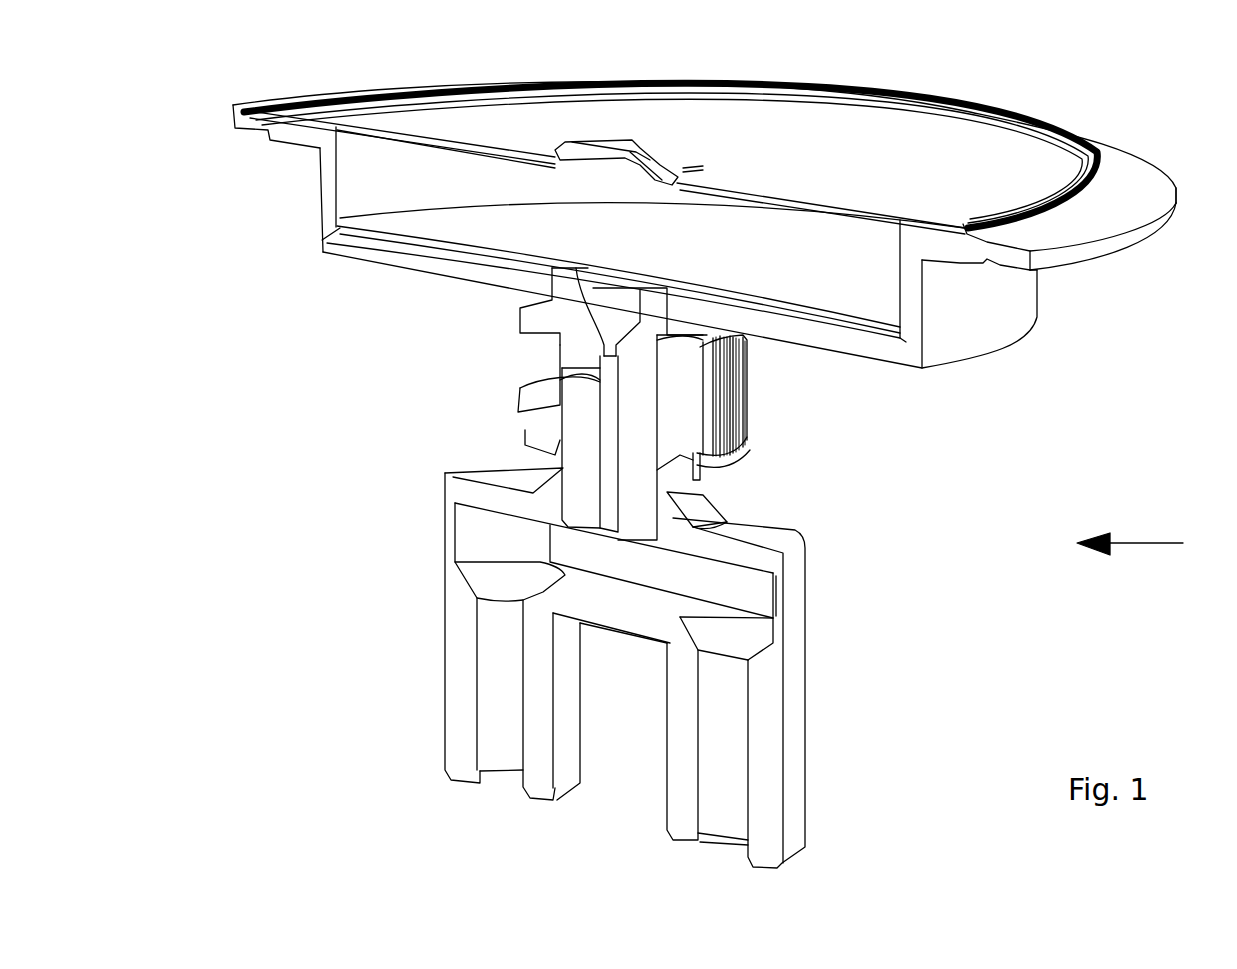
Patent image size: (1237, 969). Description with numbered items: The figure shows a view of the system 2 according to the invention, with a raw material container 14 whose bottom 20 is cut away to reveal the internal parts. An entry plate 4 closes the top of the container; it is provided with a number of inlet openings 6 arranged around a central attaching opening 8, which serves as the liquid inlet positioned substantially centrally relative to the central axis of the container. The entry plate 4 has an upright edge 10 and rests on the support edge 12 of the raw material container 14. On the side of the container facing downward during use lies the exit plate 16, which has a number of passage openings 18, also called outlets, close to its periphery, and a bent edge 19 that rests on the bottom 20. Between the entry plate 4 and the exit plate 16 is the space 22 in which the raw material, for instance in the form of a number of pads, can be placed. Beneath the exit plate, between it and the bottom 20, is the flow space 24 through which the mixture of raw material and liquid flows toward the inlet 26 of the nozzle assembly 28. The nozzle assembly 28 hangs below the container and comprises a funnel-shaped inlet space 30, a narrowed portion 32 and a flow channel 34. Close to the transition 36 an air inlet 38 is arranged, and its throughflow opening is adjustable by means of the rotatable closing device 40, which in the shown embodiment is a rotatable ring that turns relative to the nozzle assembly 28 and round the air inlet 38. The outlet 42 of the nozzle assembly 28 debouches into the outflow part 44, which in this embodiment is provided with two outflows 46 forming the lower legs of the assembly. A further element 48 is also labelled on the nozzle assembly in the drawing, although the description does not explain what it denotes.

The system 2 is at (1150, 545).
The entry plate 4 is at (848, 165).
The inlet openings 6 is at (687, 167).
The central attaching opening 8 is at (620, 147).
The upright edge 10 is at (295, 110).
The support edge 12 is at (267, 107).
The raw material container 14 is at (327, 213).
The exit plate 16 is at (800, 277).
The passage openings 18 is at (457, 207).
The bent edge 19 is at (325, 243).
The bottom 20 is at (453, 270).
The space 22 is at (358, 172).
The flow space 24 is at (392, 243).
The inlet 26 is at (597, 277).
The nozzle assembly 28 is at (580, 440).
The funnel-shaped inlet space 30 is at (612, 318).
The narrowed portion 32 is at (612, 360).
The flow channel 34 is at (662, 443).
The transition 36 is at (633, 395).
The air inlet 38 is at (590, 380).
The closing device 40 is at (675, 395).
The outlet 42 is at (613, 515).
The outflow part 44 is at (795, 590).
The outflows 46 is at (498, 755).
The guide pin 48 is at (697, 468).